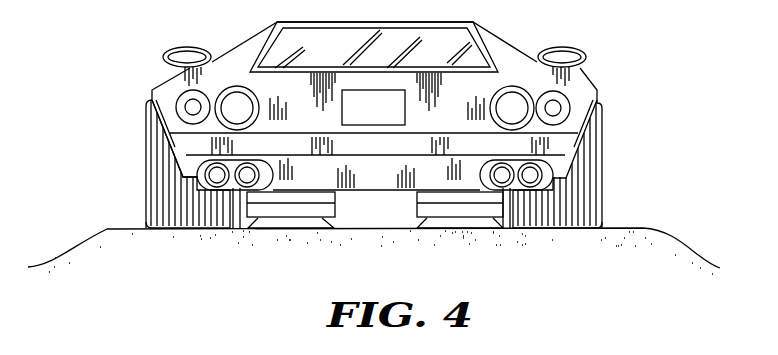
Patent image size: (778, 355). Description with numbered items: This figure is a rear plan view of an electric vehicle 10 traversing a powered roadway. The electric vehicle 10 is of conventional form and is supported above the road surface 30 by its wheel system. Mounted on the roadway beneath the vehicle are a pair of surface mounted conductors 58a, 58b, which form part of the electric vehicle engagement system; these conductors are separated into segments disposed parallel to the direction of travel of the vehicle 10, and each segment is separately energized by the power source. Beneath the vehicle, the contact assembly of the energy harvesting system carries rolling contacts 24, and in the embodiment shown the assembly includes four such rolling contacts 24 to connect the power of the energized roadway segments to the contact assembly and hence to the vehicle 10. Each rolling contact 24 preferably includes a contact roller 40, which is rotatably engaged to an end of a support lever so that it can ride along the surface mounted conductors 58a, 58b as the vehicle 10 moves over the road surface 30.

The electric vehicle 10 is at (500, 36).
The rolling contacts 24 is at (412, 203).
The road surface 30 is at (612, 230).
The contact roller 40 is at (243, 218).
The surface mounted conductor 58a is at (290, 225).
The surface mounted conductor 58b is at (467, 225).